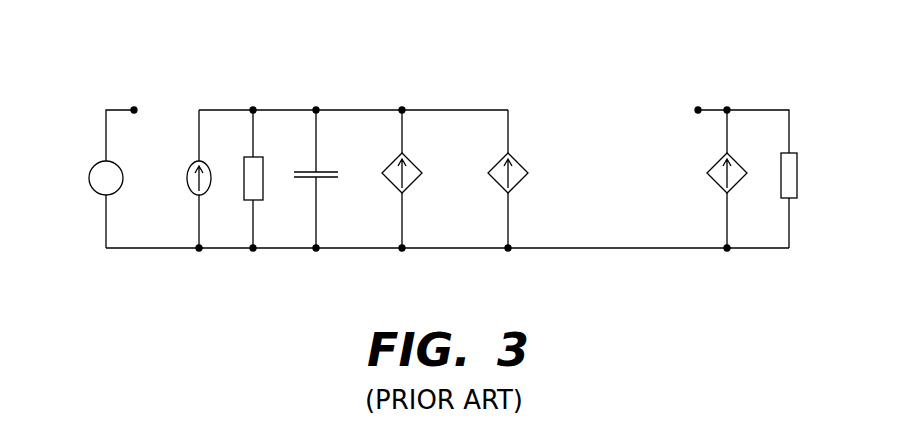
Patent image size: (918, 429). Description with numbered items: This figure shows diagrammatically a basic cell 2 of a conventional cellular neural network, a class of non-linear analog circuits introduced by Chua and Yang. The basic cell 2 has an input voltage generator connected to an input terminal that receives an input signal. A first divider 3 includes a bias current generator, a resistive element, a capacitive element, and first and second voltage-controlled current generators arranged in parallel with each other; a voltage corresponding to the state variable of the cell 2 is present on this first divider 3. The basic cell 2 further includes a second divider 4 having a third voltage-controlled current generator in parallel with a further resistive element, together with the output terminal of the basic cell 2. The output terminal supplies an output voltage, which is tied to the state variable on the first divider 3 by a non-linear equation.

The basic cell 2 is at (443, 164).
The first divider 3 is at (347, 127).
The second divider 4 is at (757, 230).